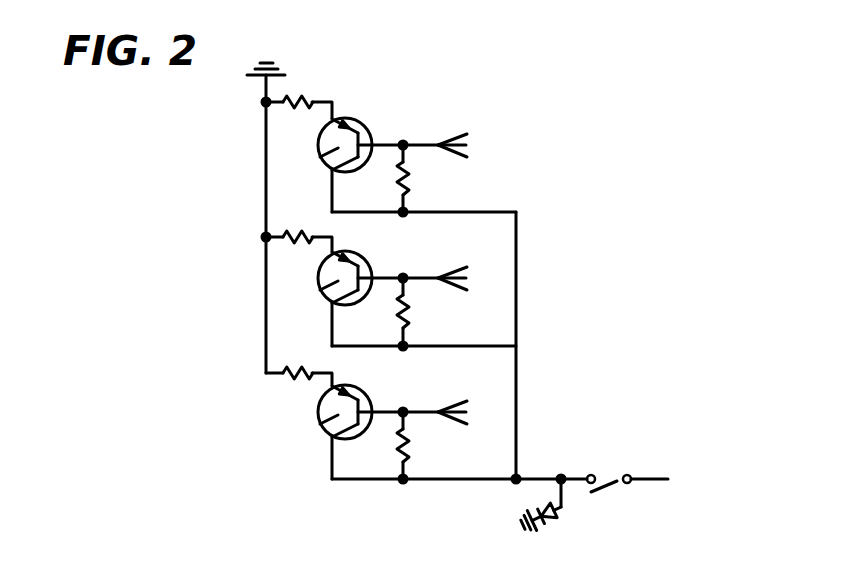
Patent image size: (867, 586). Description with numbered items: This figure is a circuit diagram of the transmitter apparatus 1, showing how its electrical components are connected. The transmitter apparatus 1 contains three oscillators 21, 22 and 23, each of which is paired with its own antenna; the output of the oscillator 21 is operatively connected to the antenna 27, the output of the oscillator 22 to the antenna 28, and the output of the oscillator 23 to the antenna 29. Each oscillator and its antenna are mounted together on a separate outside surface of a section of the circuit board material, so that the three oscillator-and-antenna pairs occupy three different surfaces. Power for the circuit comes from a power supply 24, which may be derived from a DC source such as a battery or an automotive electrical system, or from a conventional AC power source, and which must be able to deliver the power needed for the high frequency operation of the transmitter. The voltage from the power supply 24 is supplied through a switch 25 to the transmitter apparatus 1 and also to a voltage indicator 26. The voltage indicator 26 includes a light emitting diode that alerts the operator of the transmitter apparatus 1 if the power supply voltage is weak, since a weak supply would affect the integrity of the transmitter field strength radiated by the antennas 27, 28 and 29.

The transmitter apparatus 1 is at (587, 282).
The oscillator 21 is at (352, 423).
The oscillator 22 is at (352, 288).
The oscillator 23 is at (352, 154).
The power supply 24 is at (703, 463).
The switch 25 is at (609, 472).
The voltage indicator 26 is at (548, 528).
The antenna 27 is at (405, 395).
The antenna 28 is at (405, 261).
The antenna 29 is at (405, 128).